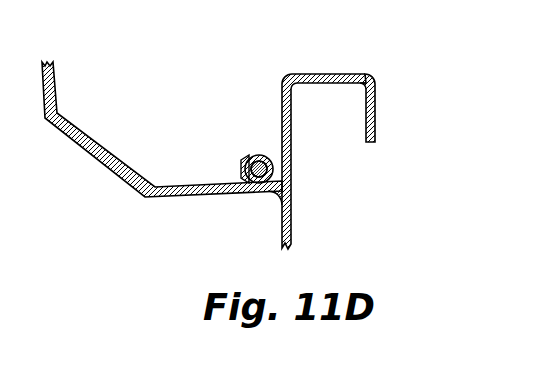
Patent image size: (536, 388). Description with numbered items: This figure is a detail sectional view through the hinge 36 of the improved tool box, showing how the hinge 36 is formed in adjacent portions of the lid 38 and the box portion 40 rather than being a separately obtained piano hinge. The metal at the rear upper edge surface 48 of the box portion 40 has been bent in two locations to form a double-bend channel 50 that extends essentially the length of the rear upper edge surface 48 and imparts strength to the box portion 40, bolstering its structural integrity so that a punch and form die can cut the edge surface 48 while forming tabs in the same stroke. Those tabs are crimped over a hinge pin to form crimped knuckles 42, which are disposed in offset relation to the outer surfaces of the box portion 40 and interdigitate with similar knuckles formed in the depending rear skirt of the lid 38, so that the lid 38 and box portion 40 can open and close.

The hinge 36 is at (230, 150).
The lid 38 is at (55, 93).
The box portion 40 is at (282, 213).
The crimped knuckles 42 is at (259, 152).
The rear upper edge surface 48 is at (281, 97).
The double-bend channel 50 is at (333, 137).